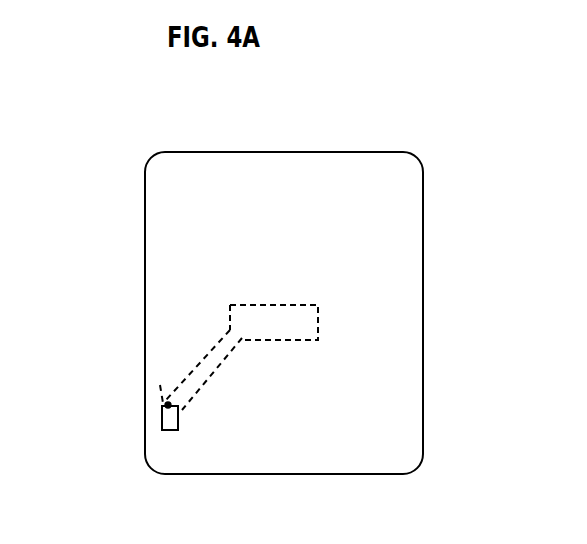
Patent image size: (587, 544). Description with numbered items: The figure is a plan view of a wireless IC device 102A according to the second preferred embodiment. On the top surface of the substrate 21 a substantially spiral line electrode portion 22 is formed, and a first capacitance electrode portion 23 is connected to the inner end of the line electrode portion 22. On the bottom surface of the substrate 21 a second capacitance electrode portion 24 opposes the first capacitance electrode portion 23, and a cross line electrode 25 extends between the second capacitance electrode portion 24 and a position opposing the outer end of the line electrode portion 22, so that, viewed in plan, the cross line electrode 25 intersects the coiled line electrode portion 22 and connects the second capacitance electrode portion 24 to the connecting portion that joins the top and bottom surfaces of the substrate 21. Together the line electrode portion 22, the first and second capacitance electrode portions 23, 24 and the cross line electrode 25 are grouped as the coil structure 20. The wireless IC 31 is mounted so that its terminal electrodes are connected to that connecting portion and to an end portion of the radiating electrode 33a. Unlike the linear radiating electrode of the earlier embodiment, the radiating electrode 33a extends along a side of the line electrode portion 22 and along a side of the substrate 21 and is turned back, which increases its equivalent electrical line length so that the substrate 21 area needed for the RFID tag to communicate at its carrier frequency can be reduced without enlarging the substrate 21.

The wireless IC device 102A is at (428, 64).
The resonant circuit portion 20 is at (80, 197).
The substrate 21 is at (413, 155).
The line electrode portion 22 is at (160, 227).
The first capacitance electrode portion 23 is at (272, 300).
The second capacitance electrode portion 24 is at (228, 305).
The cross line electrode 25 is at (207, 357).
The wireless IC 31 is at (162, 416).
The radiating electrode 33a is at (407, 440).